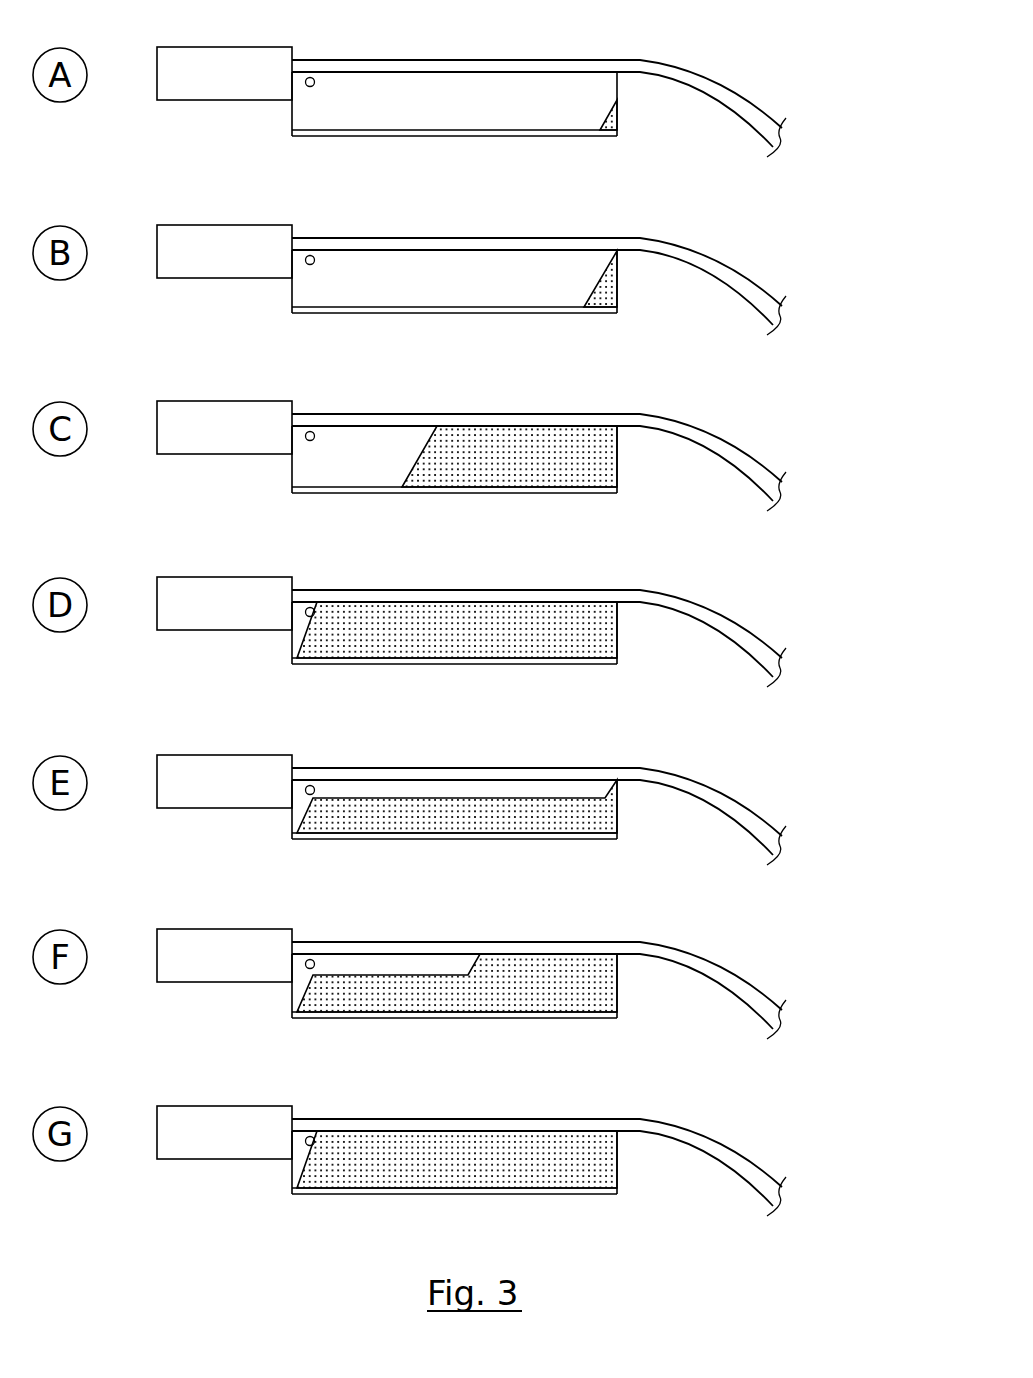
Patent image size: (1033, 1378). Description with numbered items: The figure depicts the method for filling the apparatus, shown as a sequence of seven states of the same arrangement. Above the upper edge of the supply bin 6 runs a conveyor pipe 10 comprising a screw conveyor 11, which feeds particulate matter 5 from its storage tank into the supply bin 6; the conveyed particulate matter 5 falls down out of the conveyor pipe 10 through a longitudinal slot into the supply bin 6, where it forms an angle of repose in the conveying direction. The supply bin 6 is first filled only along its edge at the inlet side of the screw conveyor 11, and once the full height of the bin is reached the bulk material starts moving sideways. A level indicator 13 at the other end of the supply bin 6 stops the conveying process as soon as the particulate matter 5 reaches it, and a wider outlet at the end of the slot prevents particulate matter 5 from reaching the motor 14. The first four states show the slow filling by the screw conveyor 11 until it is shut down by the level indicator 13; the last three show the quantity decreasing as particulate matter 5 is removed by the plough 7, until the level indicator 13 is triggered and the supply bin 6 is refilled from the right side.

The particulate matter 5 is at (620, 1183).
The supply bin 6 is at (427, 1149).
The plough 7 is at (327, 1196).
The conveyor pipe 10 is at (643, 1118).
The screw conveyor 11 is at (697, 1139).
The level indicator 13 is at (314, 1136).
The motor 14 is at (249, 1124).